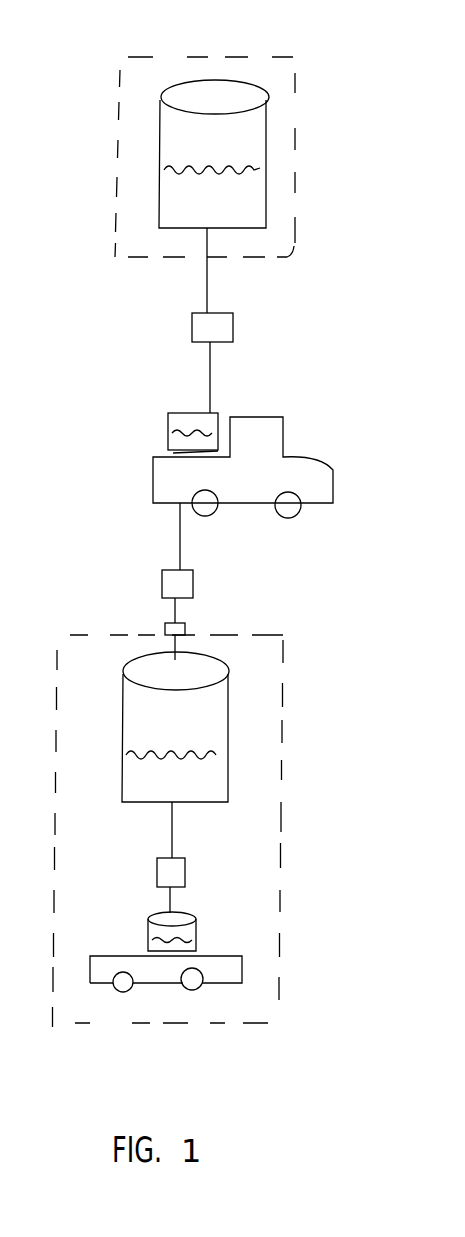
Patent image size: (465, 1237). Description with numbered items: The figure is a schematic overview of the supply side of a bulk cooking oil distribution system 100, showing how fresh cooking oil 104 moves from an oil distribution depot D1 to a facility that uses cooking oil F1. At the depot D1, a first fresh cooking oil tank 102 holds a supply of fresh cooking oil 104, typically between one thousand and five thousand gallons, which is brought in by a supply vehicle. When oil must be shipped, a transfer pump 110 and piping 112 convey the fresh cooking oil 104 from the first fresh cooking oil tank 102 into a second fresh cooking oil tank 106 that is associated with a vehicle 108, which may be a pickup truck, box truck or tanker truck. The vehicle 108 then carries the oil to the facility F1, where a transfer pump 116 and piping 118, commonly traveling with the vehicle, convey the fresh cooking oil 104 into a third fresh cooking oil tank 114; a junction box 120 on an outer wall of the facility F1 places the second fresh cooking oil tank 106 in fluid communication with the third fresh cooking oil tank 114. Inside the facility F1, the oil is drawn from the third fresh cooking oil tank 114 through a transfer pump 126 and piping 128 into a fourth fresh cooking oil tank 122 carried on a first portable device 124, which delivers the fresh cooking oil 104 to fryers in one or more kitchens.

The bulk cooking oil distribution system 100 is at (343, 63).
The oil distribution depot D1 is at (232, 55).
The facility that uses cooking oil F1 is at (283, 693).
The first fresh cooking oil tank 102 is at (256, 131).
The fresh cooking oil 104 is at (253, 200).
The second fresh cooking oil tank 106 is at (172, 418).
The vehicle 108 is at (318, 475).
The transfer pump 110 is at (230, 323).
The piping 112 is at (210, 373).
The third fresh cooking oil tank 114 is at (205, 665).
The transfer pump 116 is at (192, 580).
The piping 118 is at (180, 542).
The junction box 120 is at (165, 625).
The fourth fresh cooking oil tank 122 is at (192, 925).
The first portable device 124 is at (228, 972).
The transfer pump 126 is at (182, 870).
The piping 128 is at (170, 832).